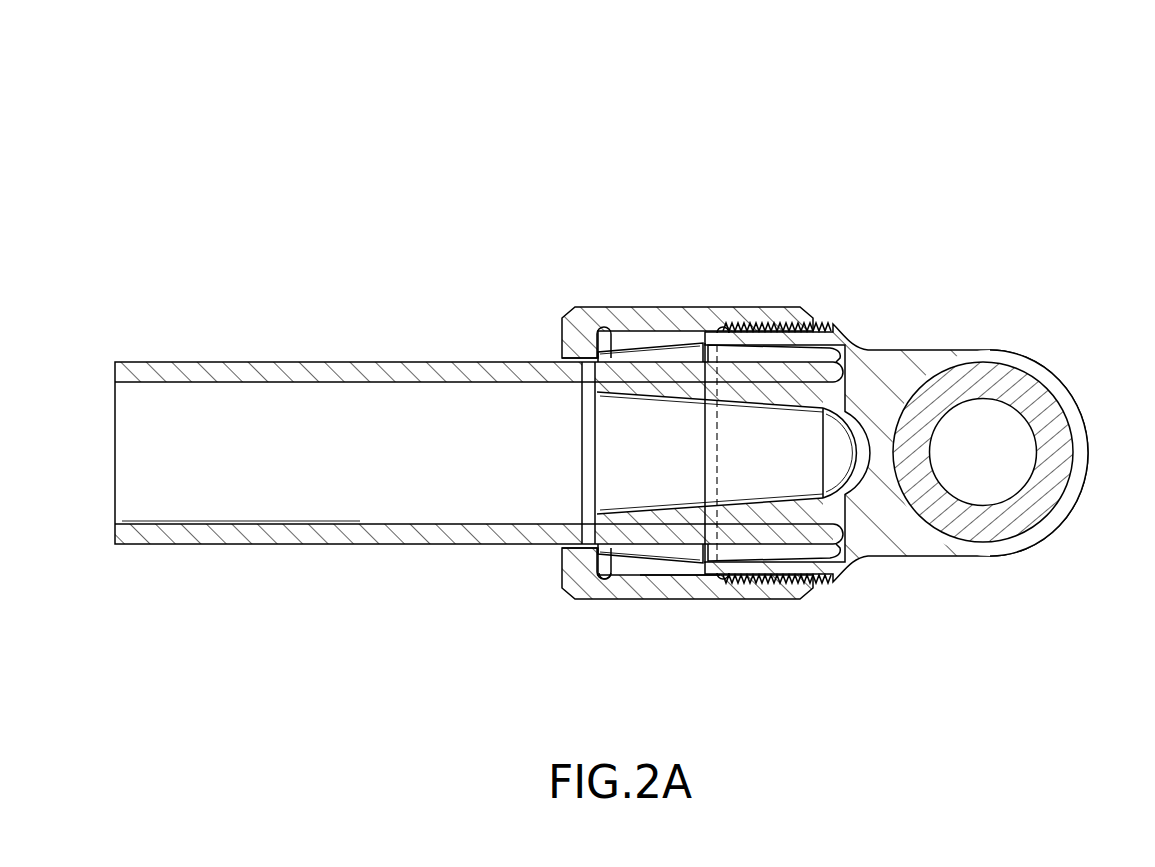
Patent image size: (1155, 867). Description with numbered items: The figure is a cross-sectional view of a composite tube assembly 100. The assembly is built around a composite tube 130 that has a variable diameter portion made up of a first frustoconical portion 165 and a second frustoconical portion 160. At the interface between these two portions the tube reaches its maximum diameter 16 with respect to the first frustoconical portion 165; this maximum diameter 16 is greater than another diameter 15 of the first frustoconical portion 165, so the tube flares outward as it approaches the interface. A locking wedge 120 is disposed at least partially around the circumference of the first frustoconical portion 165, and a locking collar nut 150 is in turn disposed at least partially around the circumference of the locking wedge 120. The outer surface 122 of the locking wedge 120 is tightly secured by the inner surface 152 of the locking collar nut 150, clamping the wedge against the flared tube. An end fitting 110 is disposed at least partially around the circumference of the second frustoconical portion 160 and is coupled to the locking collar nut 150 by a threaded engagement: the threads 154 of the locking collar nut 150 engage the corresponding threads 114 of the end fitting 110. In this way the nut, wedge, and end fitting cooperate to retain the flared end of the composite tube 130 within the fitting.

The composite tube assembly 100 is at (905, 145).
The end fitting 110 is at (1040, 372).
The threads 114 is at (803, 590).
The locking wedge 120 is at (618, 340).
The outer surface 122 is at (610, 590).
The composite tube 130 is at (233, 372).
The locking collar nut 150 is at (637, 318).
The inner surface 152 is at (683, 575).
The threads 154 is at (740, 578).
The second frustoconical portion 160 is at (797, 322).
The first frustoconical portion 165 is at (653, 343).
The diameter 15 is at (581, 452).
The maximum diameter 16 is at (705, 452).